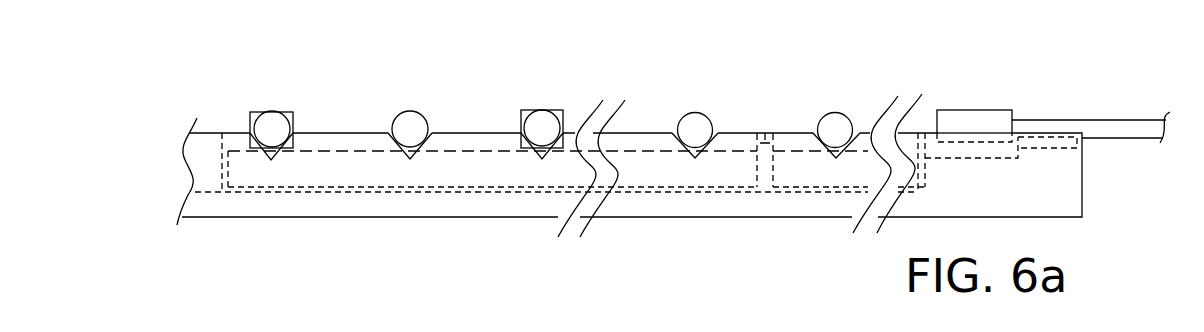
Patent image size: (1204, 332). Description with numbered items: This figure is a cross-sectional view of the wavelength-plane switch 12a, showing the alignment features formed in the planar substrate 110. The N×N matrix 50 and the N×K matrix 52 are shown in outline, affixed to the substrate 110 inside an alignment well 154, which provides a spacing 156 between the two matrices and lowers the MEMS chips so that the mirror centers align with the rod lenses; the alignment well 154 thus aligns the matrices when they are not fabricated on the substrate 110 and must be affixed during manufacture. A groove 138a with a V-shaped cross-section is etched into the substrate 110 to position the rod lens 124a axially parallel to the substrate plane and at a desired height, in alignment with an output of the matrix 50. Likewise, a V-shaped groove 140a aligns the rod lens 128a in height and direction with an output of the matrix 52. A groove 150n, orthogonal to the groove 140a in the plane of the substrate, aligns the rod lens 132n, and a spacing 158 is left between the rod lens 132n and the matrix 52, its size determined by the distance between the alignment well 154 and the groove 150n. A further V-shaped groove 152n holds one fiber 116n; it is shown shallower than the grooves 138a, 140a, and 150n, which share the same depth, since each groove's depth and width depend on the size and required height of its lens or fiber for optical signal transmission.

The wavelength-plane switch 12a is at (536, 83).
The N×N matrix 50 is at (386, 152).
The N×K matrix 52 is at (855, 108).
The substrate 110 is at (278, 217).
The fiber 116n is at (1085, 118).
The rod lens 124a is at (272, 127).
The rod lens 128a is at (835, 128).
The rod lens 132n is at (995, 110).
The groove 138a is at (257, 145).
The groove 140a is at (832, 152).
The groove 150n is at (978, 158).
The groove 152n is at (1050, 148).
The alignment well 154 is at (647, 192).
The spacing 156 is at (763, 106).
The spacing 158 is at (931, 105).